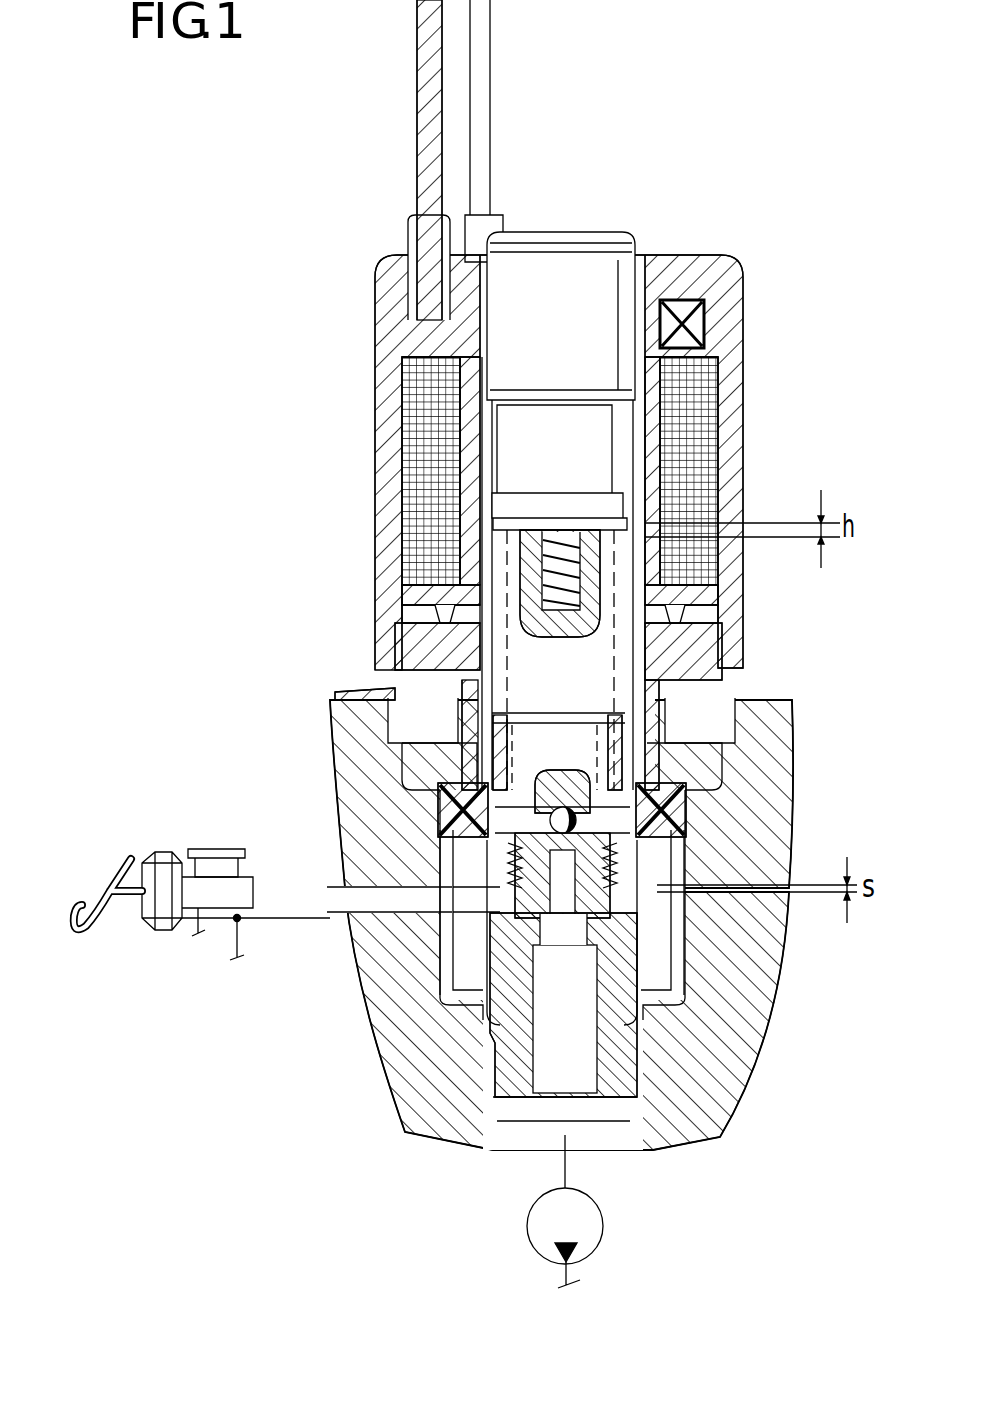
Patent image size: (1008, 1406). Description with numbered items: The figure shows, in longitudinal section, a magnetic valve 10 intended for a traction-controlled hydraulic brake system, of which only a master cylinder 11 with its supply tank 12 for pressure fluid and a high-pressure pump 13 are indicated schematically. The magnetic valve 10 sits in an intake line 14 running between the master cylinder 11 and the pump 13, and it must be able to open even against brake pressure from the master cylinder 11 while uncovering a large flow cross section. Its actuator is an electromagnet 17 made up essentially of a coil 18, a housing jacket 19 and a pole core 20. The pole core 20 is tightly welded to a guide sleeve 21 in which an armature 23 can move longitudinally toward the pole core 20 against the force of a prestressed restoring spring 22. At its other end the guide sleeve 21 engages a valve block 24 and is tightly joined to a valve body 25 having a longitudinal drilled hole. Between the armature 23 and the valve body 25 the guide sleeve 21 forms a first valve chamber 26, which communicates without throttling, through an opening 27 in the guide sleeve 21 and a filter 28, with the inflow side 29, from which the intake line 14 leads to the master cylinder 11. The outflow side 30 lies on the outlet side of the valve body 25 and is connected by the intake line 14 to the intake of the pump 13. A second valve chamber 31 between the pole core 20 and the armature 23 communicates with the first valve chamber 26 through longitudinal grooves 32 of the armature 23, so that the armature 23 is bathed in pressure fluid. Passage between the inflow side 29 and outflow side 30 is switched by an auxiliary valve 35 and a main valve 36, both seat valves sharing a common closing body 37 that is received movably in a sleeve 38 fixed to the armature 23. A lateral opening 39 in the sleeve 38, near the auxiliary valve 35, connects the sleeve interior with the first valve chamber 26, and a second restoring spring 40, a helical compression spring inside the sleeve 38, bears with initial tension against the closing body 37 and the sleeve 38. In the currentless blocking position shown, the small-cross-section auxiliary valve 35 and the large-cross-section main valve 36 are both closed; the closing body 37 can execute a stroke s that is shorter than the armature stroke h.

The magnetic valve 10 is at (630, 135).
The master cylinder 11 is at (205, 890).
The supply tank 12 is at (200, 848).
The high-pressure pump 13 is at (540, 1232).
The intake line 14 is at (290, 935).
The electromagnet 17 is at (355, 378).
The coil 18 is at (425, 437).
The housing jacket 19 is at (395, 487).
The pole core 20 is at (642, 265).
The guide sleeve 21 is at (495, 592).
The restoring spring 22 is at (590, 583).
The armature 23 is at (600, 650).
The valve block 24 is at (410, 1060).
The valve body 25 is at (505, 1072).
The first valve chamber 26 is at (520, 822).
The opening 27 is at (520, 907).
The filter 28 is at (470, 915).
The inflow side 29 is at (400, 935).
The outflow side 30 is at (525, 1115).
The second valve chamber 31 is at (490, 545).
The longitudinal grooves 32 is at (420, 648).
The auxiliary valve 35 is at (475, 780).
The main valve 36 is at (500, 905).
The closing body 37 is at (600, 885).
The sleeve 38 is at (640, 740).
The lateral opening 39 is at (585, 828).
The second restoring spring 40 is at (620, 860).